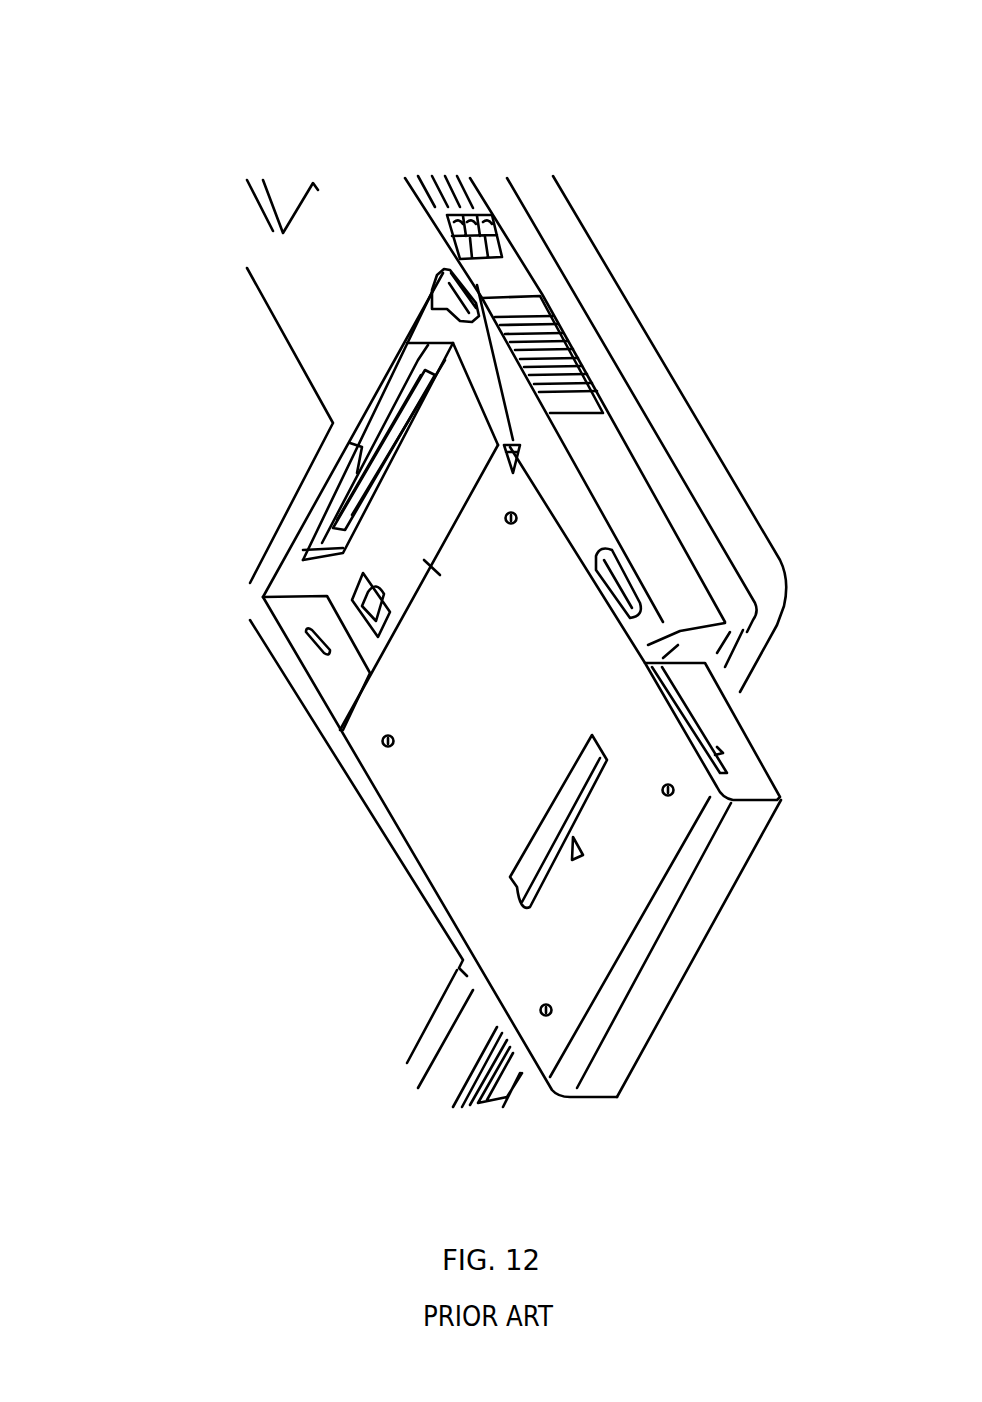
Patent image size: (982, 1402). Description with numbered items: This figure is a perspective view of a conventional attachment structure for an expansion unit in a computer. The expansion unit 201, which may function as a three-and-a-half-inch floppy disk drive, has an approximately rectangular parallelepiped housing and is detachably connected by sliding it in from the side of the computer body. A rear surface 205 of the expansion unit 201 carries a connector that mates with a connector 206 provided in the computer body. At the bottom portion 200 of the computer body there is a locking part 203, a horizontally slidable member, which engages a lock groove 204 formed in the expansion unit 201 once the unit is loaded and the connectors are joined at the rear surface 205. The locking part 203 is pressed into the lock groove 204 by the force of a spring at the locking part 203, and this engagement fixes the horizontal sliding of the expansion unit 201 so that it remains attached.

The bottom portion 200 is at (367, 287).
The expansion unit 201 is at (673, 800).
The locking part 203 is at (443, 275).
The lock groove 204 is at (504, 446).
The rear surface 205 is at (433, 567).
The connector 206 is at (362, 480).